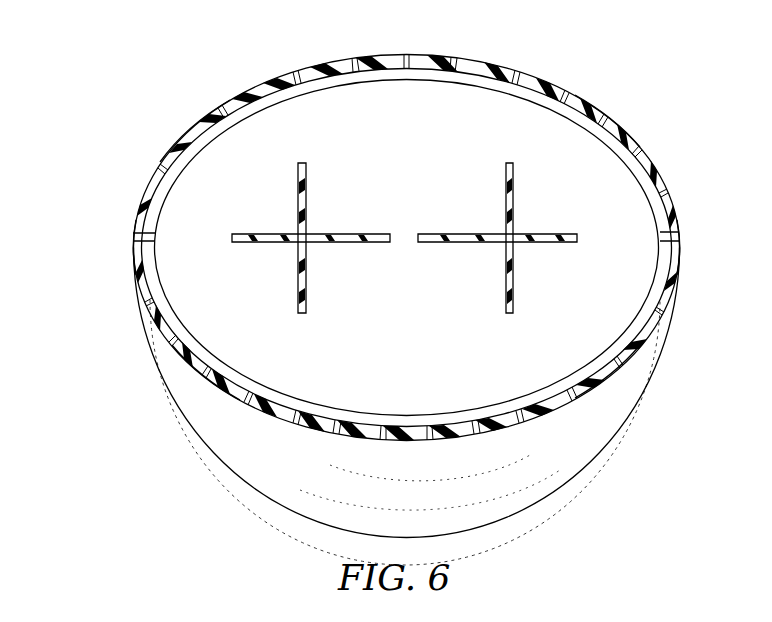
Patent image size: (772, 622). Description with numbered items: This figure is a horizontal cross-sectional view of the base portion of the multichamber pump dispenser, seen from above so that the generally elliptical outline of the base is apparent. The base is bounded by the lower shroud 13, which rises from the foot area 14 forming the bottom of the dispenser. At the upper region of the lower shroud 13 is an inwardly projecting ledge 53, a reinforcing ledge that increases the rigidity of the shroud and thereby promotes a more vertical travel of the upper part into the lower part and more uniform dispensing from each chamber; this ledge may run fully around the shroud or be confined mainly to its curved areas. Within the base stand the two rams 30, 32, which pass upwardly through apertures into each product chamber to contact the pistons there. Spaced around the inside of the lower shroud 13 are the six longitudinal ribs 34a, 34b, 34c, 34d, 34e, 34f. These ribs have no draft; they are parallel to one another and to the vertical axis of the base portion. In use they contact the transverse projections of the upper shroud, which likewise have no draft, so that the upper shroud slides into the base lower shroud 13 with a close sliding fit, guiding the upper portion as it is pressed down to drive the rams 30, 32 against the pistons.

The shroud 13 is at (472, 58).
The foot area 14 is at (573, 448).
The ram 30 is at (567, 233).
The ram 32 is at (300, 185).
The inwardly projecting ledge 53 is at (640, 167).
The longitudinal rib 34a is at (598, 372).
The longitudinal rib 34b is at (212, 374).
The longitudinal rib 34c is at (133, 235).
The longitudinal rib 34d is at (198, 125).
The longitudinal rib 34e is at (603, 125).
The longitudinal rib 34f is at (677, 240).